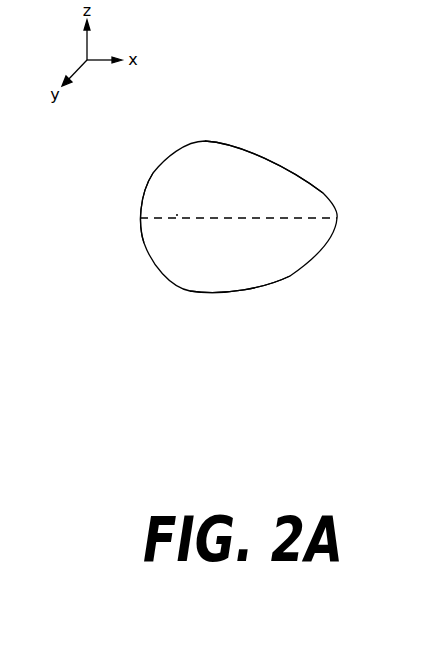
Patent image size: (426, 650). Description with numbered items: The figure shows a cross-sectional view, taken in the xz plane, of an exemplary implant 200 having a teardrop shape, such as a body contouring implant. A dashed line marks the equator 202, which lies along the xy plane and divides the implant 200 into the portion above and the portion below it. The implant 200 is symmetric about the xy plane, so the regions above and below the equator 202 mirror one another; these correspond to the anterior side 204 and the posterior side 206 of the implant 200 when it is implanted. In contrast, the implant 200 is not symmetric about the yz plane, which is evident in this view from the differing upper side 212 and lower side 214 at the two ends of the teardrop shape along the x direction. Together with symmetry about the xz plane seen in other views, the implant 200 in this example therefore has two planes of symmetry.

The implant 200 is at (170, 283).
The equator 202 is at (177, 214).
The anterior side 204 is at (232, 147).
The posterior side 206 is at (233, 288).
The upper side 212 is at (337, 218).
The lower side 214 is at (143, 221).